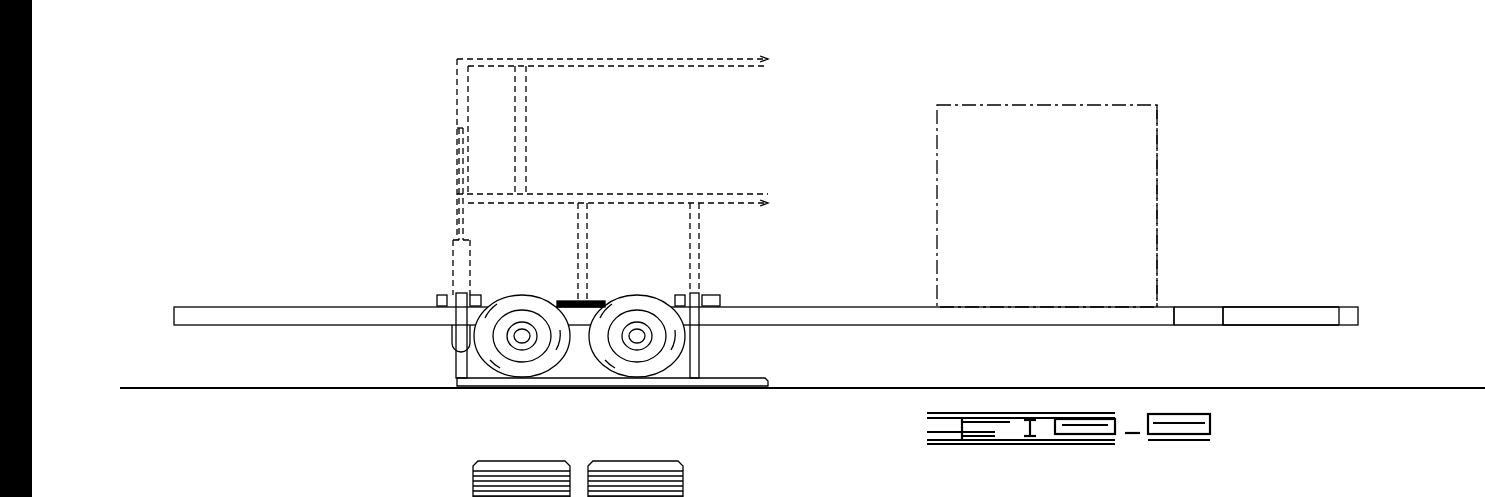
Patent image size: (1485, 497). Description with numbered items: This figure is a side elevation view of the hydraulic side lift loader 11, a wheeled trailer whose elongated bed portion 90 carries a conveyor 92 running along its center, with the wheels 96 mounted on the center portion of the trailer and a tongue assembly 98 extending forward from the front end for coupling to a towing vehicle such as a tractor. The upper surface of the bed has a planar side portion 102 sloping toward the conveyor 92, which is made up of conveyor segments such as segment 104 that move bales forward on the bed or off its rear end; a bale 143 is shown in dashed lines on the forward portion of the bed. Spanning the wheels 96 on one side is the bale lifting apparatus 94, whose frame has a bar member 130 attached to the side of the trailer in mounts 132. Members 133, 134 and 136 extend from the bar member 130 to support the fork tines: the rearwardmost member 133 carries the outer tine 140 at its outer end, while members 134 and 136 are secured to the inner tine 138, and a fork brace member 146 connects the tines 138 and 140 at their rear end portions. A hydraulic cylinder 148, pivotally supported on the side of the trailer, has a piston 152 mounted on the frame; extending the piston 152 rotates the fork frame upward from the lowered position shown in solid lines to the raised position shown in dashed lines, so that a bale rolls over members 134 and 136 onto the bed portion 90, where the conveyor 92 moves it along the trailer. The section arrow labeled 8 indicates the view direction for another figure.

The section line for FIG. 8 is at (377, 471).
The hydraulic side lift loader 11 is at (1236, 190).
The bed portion 90 is at (1060, 298).
The conveyor 92 is at (945, 496).
The bale lifting apparatus 94 is at (830, 114).
The wheels 96 is at (650, 300).
The tongue assembly 98 is at (1285, 318).
The planar side portion 102 is at (1095, 496).
The conveyor segment 104 is at (1015, 496).
The bar member 130 is at (575, 300).
The mounts 132 is at (472, 297).
The member 133 is at (457, 106).
The member 134 is at (578, 220).
The member 136 is at (700, 250).
The inner tine 138 is at (740, 198).
The tine 140 is at (718, 70).
The bale 143 is at (1158, 178).
The fork brace member 146 is at (527, 112).
The cylinder 148 is at (456, 247).
The piston 152 is at (462, 218).